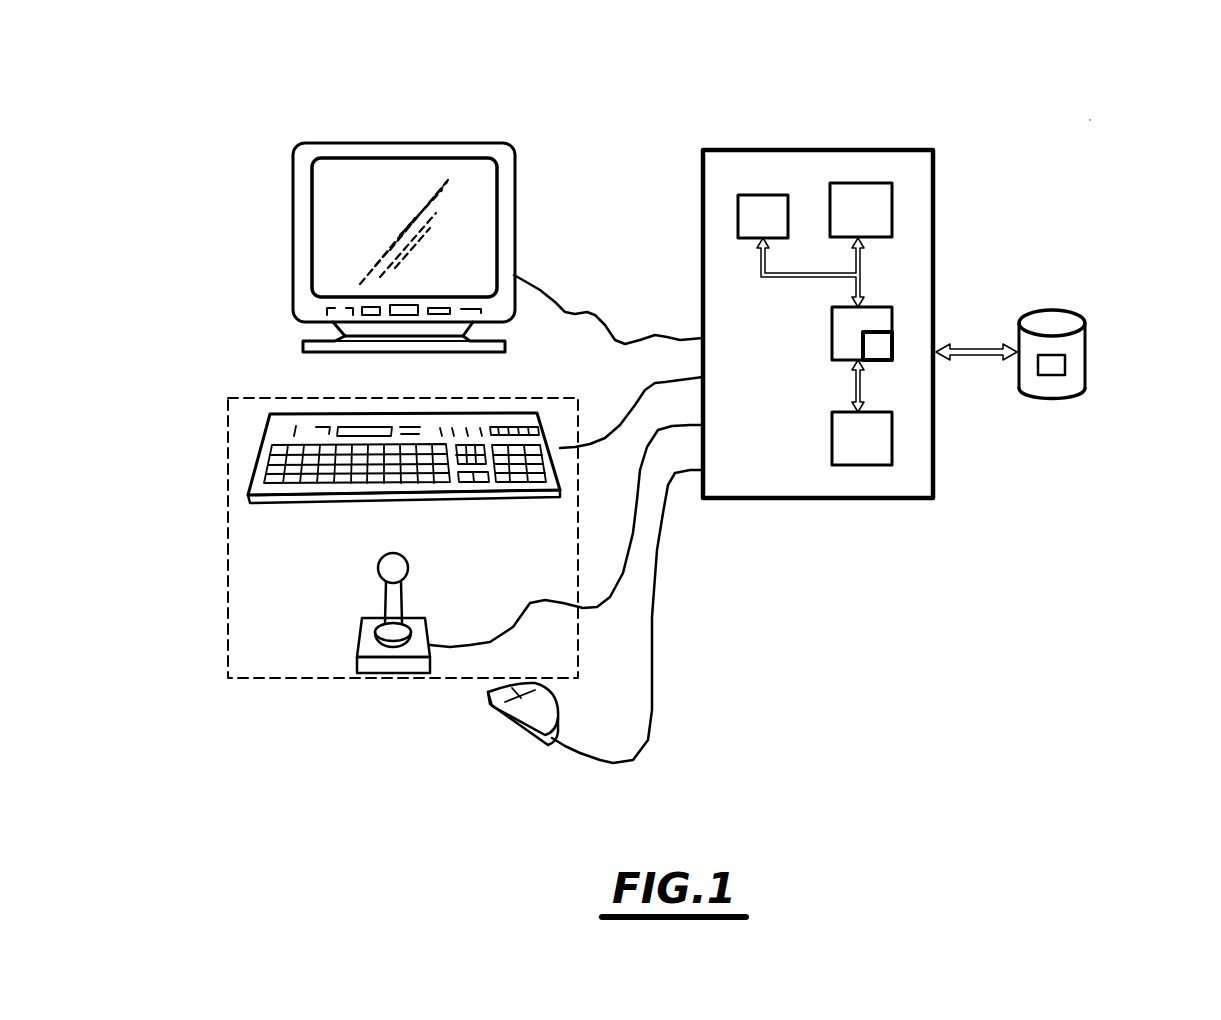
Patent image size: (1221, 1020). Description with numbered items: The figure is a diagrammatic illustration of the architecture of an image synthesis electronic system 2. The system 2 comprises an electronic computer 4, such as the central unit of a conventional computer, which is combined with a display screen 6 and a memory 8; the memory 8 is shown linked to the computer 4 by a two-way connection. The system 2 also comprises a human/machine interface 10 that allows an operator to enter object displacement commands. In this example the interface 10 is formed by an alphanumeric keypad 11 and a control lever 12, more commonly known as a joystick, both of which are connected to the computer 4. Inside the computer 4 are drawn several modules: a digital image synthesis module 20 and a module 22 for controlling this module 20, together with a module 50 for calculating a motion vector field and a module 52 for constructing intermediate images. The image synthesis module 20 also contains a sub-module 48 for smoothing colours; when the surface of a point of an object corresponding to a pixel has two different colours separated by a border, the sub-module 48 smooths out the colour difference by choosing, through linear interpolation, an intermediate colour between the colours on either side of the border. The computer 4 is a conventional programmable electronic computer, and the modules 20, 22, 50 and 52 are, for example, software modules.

The image synthesis electronic system 2 is at (1098, 114).
The electronic computer 4 is at (944, 141).
The display screen 6 is at (293, 215).
The memory 8 is at (1082, 296).
The human/machine interface 10 is at (218, 685).
The alphanumeric keypad 11 is at (262, 468).
The control lever 12 is at (368, 630).
The digital image synthesis module 20 is at (893, 316).
The control module 22 is at (857, 478).
The colour smoothing sub-module 48 is at (883, 350).
The motion vector field calculation module 50 is at (760, 195).
The intermediate image construction module 52 is at (858, 183).